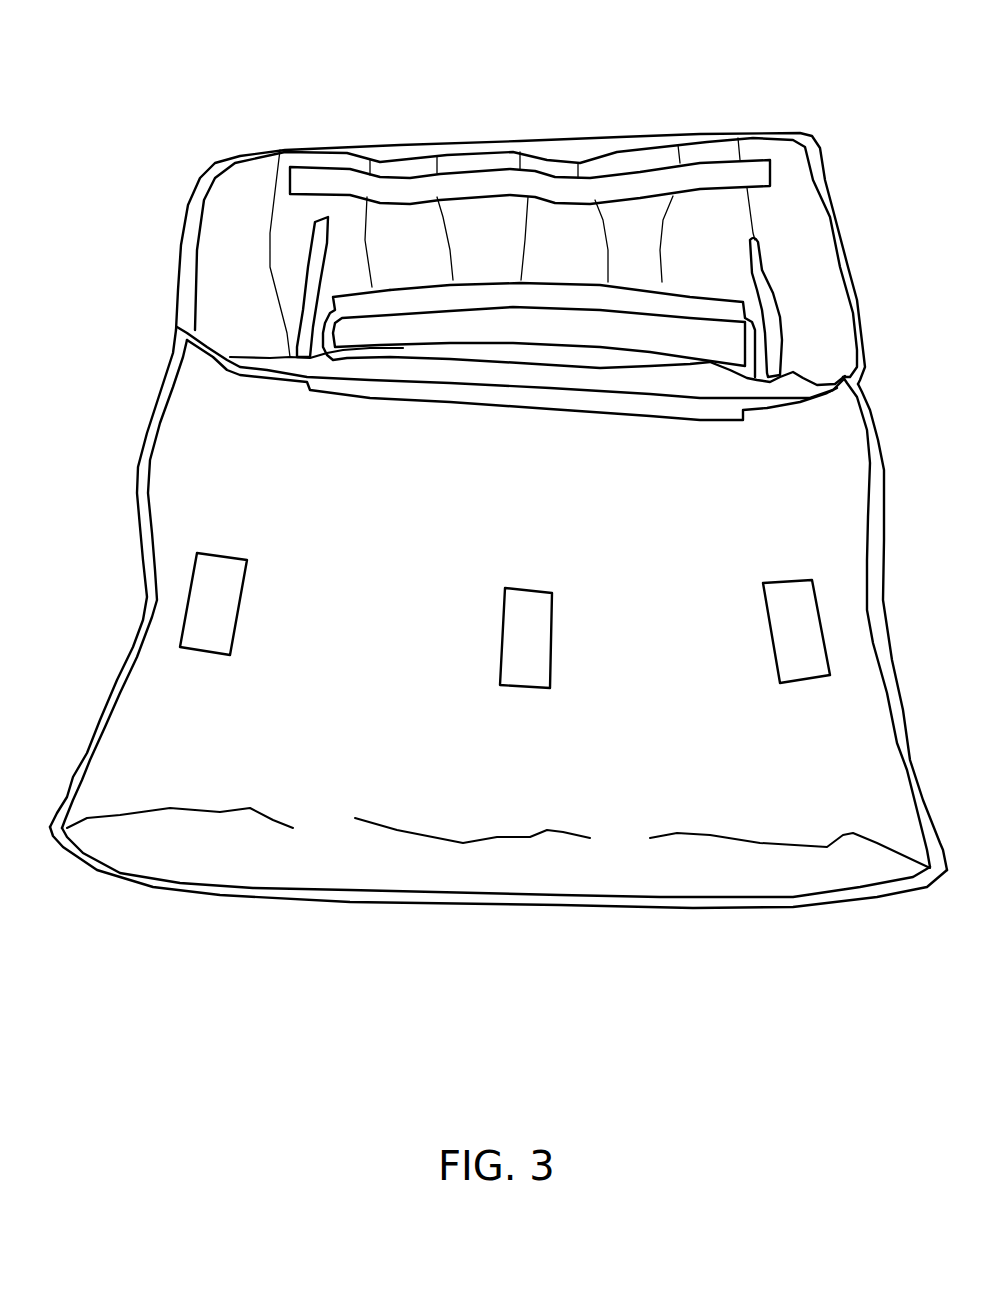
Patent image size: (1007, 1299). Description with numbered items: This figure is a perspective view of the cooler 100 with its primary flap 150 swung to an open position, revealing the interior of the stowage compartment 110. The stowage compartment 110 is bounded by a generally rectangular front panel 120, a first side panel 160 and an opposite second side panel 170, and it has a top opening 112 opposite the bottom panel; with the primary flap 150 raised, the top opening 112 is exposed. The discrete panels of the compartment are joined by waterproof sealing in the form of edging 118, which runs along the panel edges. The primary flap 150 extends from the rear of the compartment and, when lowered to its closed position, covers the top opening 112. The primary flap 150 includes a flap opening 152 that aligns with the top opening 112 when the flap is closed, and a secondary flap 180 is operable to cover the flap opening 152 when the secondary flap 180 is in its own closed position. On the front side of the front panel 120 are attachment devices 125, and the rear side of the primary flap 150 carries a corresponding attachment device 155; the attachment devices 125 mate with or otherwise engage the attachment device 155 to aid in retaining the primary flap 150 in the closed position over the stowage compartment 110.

The cooler 100 is at (290, 56).
The stowage compartment 110 is at (86, 371).
The top opening 112 is at (239, 341).
The edging 118 is at (137, 617).
The front panel 120 is at (121, 707).
The attachment devices 125 is at (237, 613).
The primary flap 150 is at (826, 174).
The flap opening 152 is at (757, 330).
The attachment device 155 is at (622, 156).
The first side panel 160 is at (118, 528).
The second side panel 170 is at (930, 548).
The secondary flap 180 is at (618, 330).